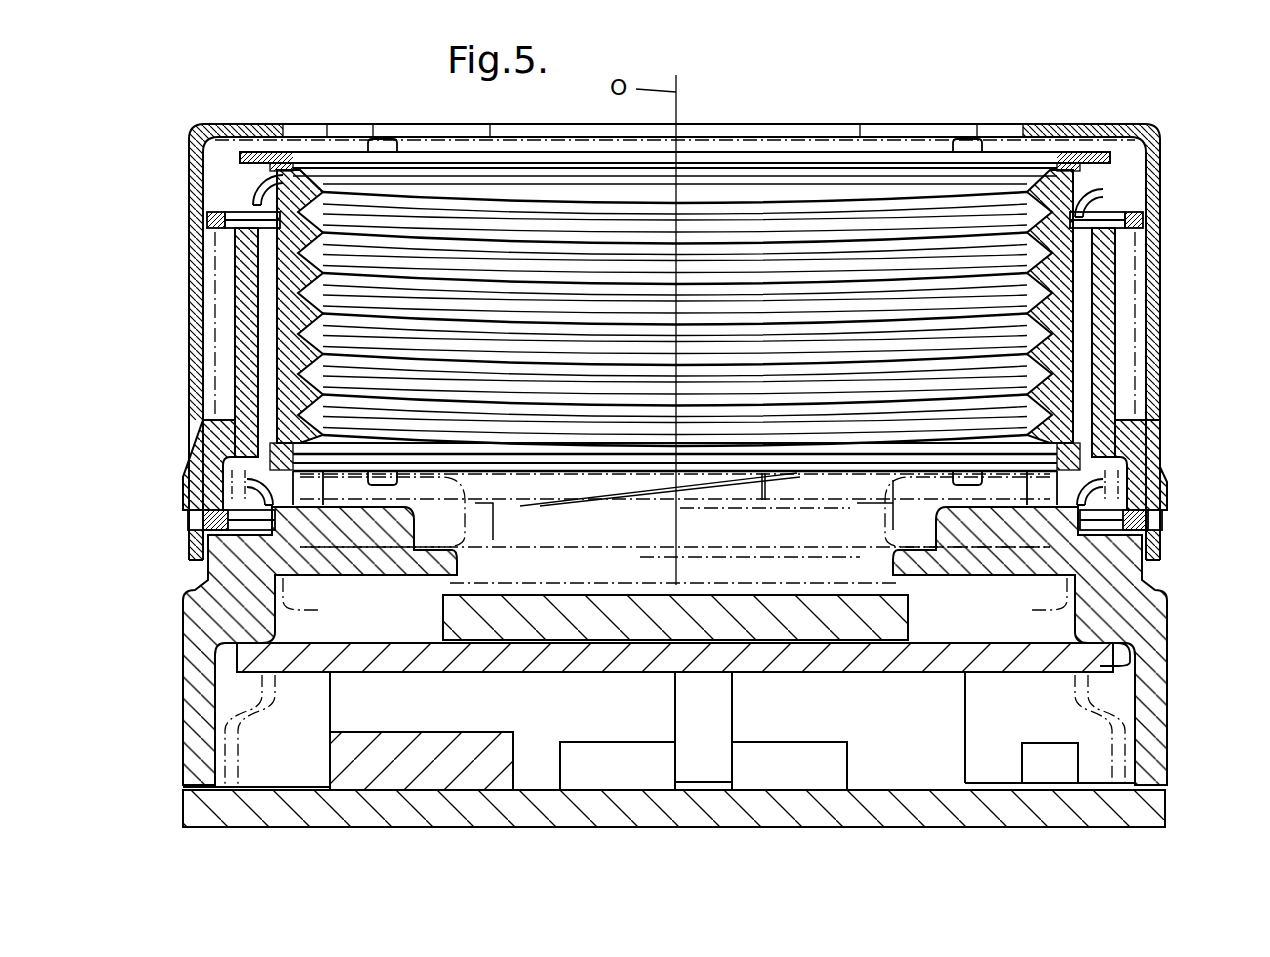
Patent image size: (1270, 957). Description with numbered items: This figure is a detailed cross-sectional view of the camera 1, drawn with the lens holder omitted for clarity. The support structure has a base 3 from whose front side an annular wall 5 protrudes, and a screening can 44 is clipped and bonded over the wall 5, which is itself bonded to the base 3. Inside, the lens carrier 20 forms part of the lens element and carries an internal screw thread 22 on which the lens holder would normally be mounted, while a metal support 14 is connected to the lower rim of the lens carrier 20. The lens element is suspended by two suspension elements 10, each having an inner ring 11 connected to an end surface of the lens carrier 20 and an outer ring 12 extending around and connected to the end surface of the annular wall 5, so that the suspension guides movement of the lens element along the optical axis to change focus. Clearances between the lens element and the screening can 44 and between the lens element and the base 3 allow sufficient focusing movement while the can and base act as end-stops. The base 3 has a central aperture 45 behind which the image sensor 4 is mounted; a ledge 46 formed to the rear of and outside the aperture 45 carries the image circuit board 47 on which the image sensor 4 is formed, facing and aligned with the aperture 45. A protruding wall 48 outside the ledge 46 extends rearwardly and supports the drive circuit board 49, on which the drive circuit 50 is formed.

The camera 1 is at (166, 158).
The base portion 3 is at (1125, 602).
The image sensor 4 is at (520, 632).
The annular wall 5 is at (1123, 407).
The suspension element 10 is at (1113, 208).
The inner ring 11 is at (1068, 163).
The outer ring 12 is at (1143, 215).
The metal support 14 is at (1098, 450).
The lens carrier 20 is at (1065, 273).
The internal screw thread 22 is at (810, 200).
The screening can 44 is at (1152, 290).
The central aperture 45 is at (902, 566).
The ledge 46 is at (1114, 652).
The image circuit board 47 is at (1003, 653).
The protruding wall 48 is at (1143, 738).
The drive circuit board 49 is at (210, 808).
The drive circuit 50 is at (535, 785).